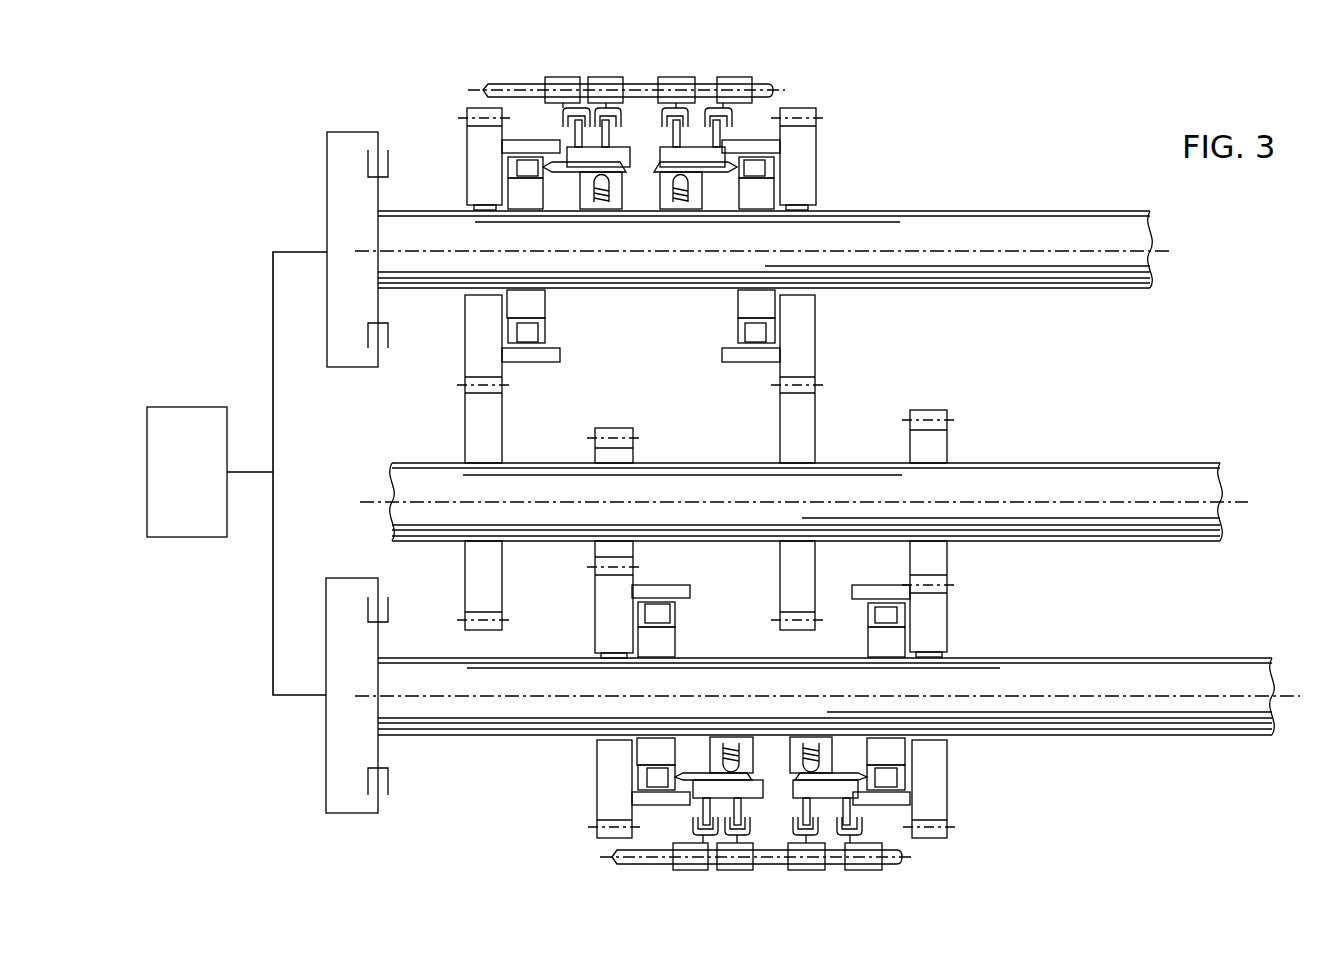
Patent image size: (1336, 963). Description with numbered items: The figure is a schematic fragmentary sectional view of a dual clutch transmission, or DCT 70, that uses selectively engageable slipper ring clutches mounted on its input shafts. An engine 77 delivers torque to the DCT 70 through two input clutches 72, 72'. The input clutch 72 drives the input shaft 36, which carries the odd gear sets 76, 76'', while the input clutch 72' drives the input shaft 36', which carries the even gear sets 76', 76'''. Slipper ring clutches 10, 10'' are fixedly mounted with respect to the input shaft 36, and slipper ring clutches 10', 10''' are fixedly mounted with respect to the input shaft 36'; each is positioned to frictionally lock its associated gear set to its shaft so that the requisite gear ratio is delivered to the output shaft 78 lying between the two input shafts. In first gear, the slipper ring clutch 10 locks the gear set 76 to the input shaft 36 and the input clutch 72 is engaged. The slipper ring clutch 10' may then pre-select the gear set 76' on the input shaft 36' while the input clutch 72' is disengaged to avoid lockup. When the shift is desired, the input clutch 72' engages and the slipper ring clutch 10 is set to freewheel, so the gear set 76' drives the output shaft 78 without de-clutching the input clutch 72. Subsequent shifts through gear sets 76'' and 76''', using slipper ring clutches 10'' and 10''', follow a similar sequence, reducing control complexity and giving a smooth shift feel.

The dual clutch transmission 70 is at (978, 96).
The input clutch 72 is at (337, 212).
The input clutch 72' is at (336, 660).
The engine 77 is at (237, 473).
The output shaft 78 is at (995, 463).
The input shaft 36 is at (764, 222).
The input shaft 36' is at (827, 668).
The gear set 76 is at (459, 369).
The gear set 76' is at (582, 633).
The gear set 76'' is at (832, 369).
The gear set 76''' is at (968, 624).
The slipper ring clutch 10 is at (549, 132).
The slipper ring clutch 10' is at (679, 819).
The slipper ring clutch 10'' is at (742, 131).
The slipper ring clutch 10''' is at (880, 819).